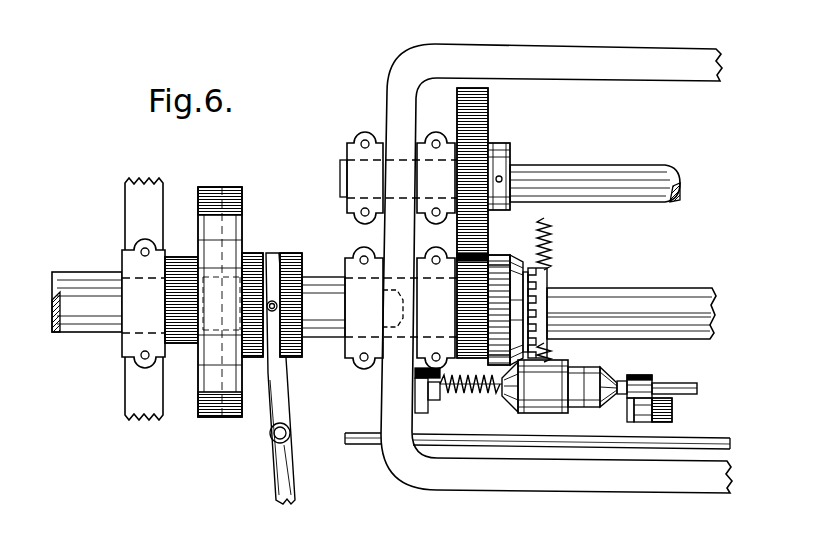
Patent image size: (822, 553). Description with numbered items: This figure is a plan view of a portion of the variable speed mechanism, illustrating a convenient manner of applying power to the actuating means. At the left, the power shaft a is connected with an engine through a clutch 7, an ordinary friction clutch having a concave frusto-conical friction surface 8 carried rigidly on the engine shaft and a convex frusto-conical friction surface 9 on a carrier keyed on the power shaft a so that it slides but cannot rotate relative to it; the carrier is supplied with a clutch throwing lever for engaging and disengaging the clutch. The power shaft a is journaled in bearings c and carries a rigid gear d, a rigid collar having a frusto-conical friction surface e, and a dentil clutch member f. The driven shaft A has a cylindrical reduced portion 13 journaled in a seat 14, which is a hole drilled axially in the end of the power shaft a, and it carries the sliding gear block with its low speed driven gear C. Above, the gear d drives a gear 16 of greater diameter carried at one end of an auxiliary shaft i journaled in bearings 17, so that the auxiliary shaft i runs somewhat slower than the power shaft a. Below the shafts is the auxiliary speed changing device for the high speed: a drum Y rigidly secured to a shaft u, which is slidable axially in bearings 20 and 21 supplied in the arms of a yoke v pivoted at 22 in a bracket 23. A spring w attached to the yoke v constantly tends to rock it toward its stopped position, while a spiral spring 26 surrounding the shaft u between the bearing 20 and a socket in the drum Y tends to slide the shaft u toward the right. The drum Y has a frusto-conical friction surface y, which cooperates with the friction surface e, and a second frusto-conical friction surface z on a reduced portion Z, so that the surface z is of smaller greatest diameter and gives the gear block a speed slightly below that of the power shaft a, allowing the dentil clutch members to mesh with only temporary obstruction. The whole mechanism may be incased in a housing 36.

The housing 36 is at (492, 58).
The bearing 20 is at (413, 400).
The driven shaft A is at (712, 288).
The gear 16 is at (490, 118).
The auxiliary shaft i is at (650, 165).
The gear d is at (477, 273).
The frusto-conical friction surface e is at (510, 262).
The cylindrical reduced portion 13 is at (550, 317).
The dentil clutch member f is at (548, 310).
The spring w is at (550, 245).
The yoke v is at (483, 393).
The spiral spring 26 is at (462, 390).
The frusto-conical friction surface y is at (505, 413).
The drum Y is at (540, 413).
The reduced portion Z is at (588, 413).
The frusto-conical friction surface z is at (607, 372).
The bearing 21 is at (640, 390).
The bracket 23 is at (658, 427).
The pivot 22 is at (672, 407).
The shaft u is at (697, 385).
The power shaft a is at (323, 333).
The concave frusto-conical friction surface 8 is at (213, 222).
The clutch 7 is at (222, 187).
The convex frusto-conical friction surface 9 is at (247, 207).
The bearings 17 is at (430, 172).
The bearings c is at (427, 267).
The seat 14 is at (397, 330).
The low speed driven gear C is at (353, 545).